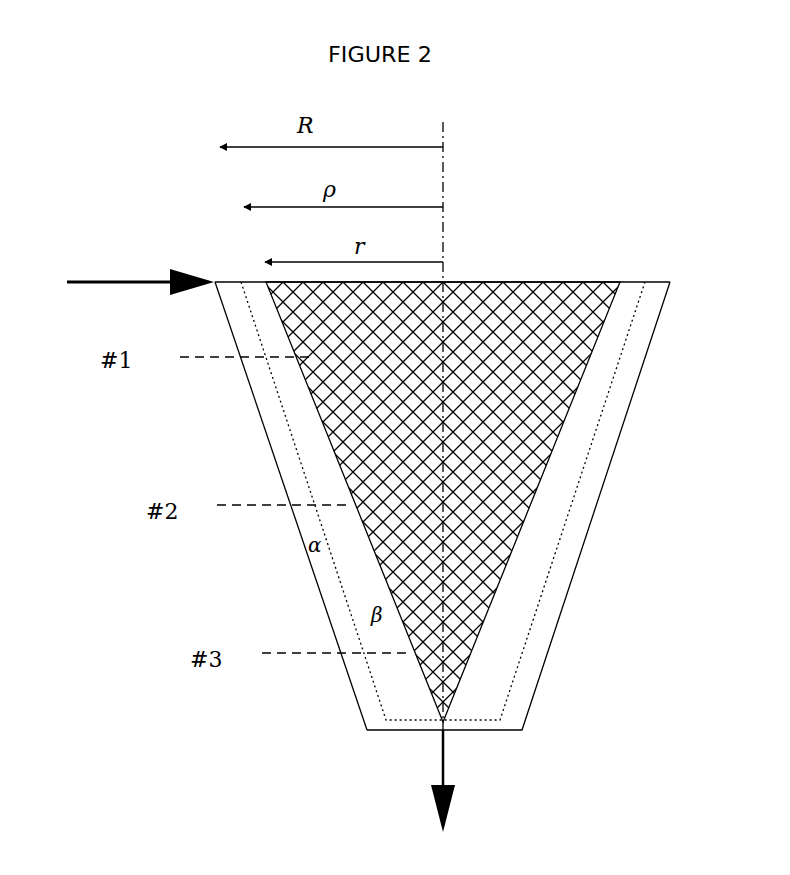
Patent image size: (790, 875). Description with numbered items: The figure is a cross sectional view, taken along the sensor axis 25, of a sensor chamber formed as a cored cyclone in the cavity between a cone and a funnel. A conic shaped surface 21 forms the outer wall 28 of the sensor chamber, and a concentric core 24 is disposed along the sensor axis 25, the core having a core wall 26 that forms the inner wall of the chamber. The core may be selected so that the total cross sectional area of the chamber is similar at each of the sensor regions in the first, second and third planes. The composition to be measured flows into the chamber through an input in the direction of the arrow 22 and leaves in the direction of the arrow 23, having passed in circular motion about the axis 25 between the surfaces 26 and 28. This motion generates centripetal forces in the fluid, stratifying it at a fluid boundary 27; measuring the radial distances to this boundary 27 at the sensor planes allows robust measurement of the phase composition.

The conic shaped surface 21 is at (624, 429).
The input flow arrow 22 is at (123, 269).
The output flow arrow 23 is at (449, 782).
The concentric core 24 is at (507, 280).
The sensor axis 25 is at (449, 164).
The core wall 26 is at (316, 421).
The fluid boundary 27 is at (271, 392).
The outer wall 28 is at (223, 316).